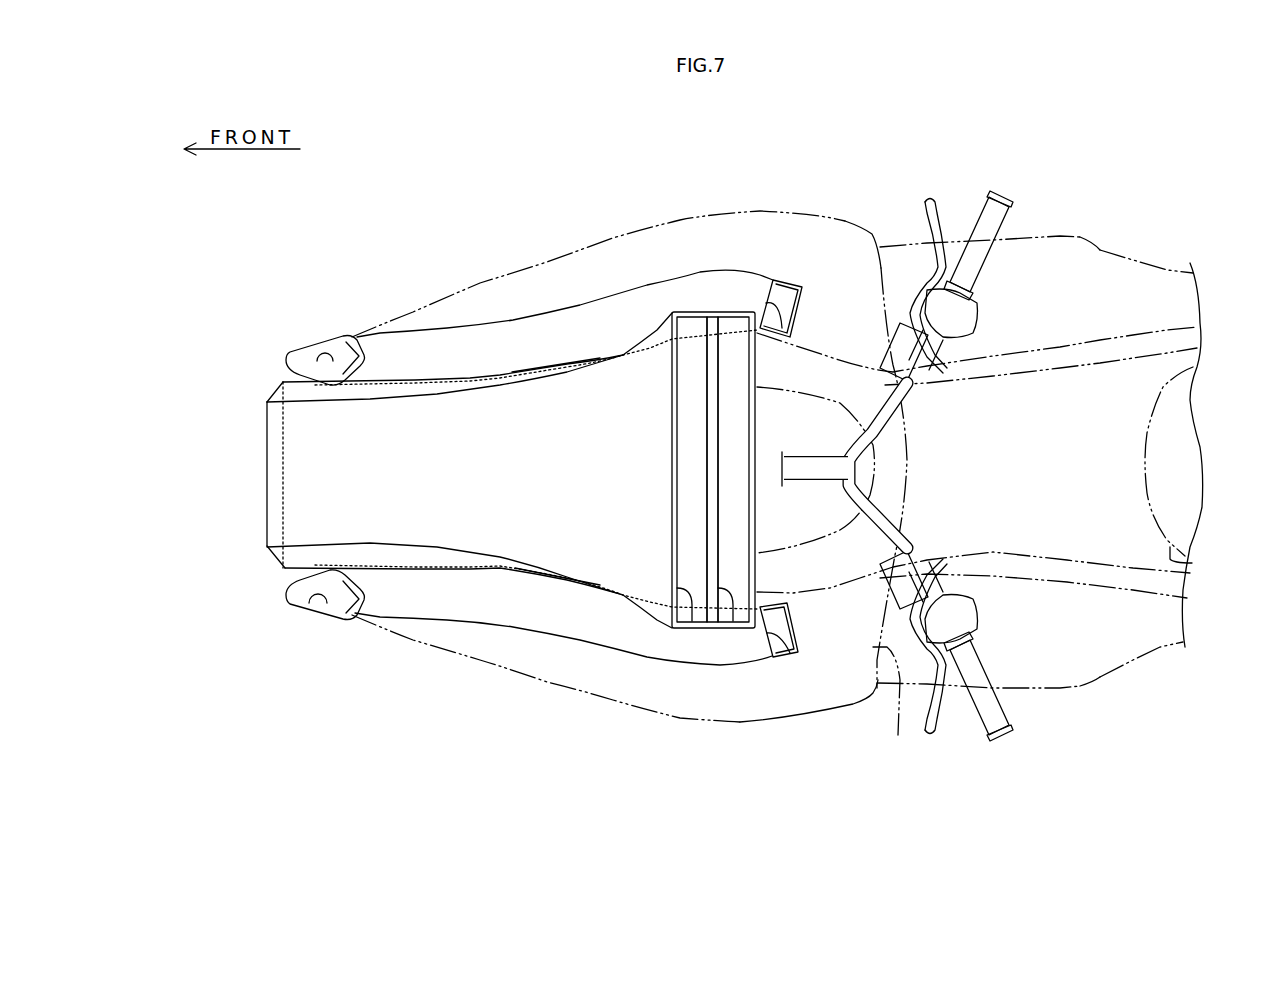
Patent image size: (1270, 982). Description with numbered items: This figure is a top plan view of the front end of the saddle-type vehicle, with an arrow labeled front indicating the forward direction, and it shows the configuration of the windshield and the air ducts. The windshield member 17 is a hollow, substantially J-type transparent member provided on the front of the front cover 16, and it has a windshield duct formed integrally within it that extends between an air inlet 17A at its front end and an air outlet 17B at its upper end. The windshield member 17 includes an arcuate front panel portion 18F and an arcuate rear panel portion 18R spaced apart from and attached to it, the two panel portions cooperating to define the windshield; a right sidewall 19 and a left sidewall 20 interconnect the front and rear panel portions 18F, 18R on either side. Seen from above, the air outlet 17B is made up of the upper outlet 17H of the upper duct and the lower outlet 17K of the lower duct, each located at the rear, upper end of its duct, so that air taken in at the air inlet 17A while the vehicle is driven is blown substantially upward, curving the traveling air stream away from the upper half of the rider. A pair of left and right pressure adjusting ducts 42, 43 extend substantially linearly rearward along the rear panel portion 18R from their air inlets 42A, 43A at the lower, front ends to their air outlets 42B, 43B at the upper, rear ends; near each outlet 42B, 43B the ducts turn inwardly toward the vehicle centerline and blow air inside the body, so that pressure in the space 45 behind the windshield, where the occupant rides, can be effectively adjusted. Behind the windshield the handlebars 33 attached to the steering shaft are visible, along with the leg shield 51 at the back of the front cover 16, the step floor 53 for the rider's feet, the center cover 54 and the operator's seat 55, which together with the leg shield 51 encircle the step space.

The front cover 16 is at (817, 713).
The windshield member 17 is at (257, 437).
The air inlet 17A is at (256, 501).
The air outlet 17B is at (700, 317).
The upper outlet 17H is at (688, 607).
The lower outlet 17K is at (733, 607).
The front panel portion 18F is at (462, 466).
The rear panel portion 18R is at (757, 438).
The right sidewall 19 is at (737, 320).
The left sidewall 20 is at (706, 607).
The handlebars 33 is at (993, 707).
The pressure adjusting duct 42 is at (482, 636).
The air inlet 42A is at (325, 614).
The air outlet 42B is at (787, 657).
The pressure adjusting duct 43 is at (538, 302).
The air inlet 43A is at (330, 342).
The air outlet 43B is at (793, 280).
The space 45 is at (1053, 388).
The leg shield 51 is at (898, 735).
The step floor 53 is at (1141, 650).
The center cover 54 is at (1125, 357).
The operator's seat 55 is at (1192, 563).